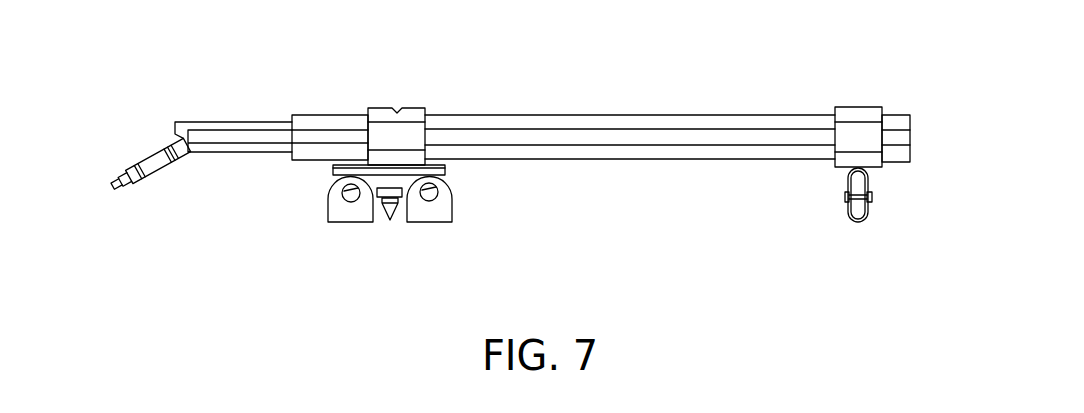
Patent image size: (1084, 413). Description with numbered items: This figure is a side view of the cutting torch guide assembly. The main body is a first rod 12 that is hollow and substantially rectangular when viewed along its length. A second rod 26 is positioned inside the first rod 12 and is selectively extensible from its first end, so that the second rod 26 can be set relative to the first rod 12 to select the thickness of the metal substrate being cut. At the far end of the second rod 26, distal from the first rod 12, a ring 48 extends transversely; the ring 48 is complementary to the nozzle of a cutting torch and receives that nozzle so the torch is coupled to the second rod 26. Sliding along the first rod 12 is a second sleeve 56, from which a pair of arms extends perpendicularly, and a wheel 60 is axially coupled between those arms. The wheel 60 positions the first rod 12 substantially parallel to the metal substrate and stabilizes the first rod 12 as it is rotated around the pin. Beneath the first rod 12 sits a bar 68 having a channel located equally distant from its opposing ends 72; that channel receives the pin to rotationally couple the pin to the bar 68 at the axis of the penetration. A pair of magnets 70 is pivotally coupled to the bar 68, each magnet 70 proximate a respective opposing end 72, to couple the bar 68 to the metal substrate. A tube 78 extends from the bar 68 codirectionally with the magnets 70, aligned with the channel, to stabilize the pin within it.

The first rod 12 is at (590, 135).
The second rod 26 is at (236, 129).
The ring 48 is at (140, 164).
The second sleeve 56 is at (855, 128).
The wheel 60 is at (858, 215).
The bar 68 is at (340, 175).
The magnets 70 is at (385, 235).
The opposing ends 72 is at (400, 188).
The tube 78 is at (437, 184).